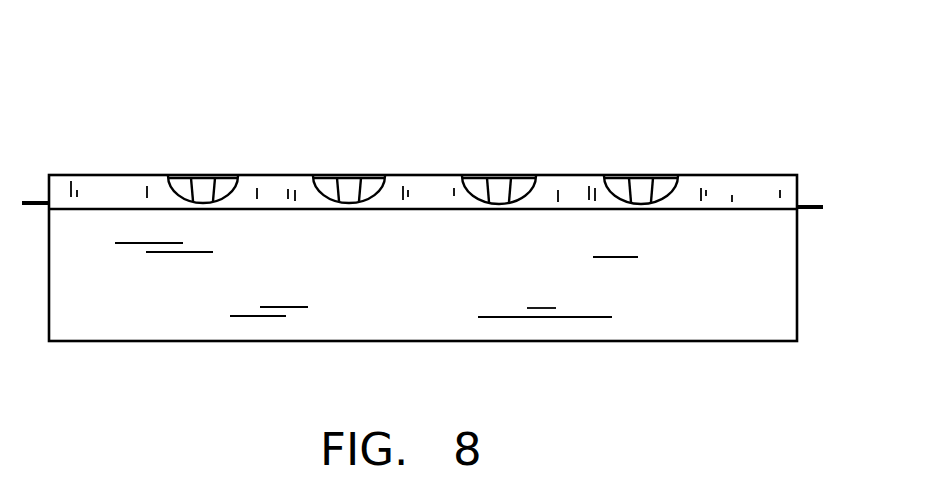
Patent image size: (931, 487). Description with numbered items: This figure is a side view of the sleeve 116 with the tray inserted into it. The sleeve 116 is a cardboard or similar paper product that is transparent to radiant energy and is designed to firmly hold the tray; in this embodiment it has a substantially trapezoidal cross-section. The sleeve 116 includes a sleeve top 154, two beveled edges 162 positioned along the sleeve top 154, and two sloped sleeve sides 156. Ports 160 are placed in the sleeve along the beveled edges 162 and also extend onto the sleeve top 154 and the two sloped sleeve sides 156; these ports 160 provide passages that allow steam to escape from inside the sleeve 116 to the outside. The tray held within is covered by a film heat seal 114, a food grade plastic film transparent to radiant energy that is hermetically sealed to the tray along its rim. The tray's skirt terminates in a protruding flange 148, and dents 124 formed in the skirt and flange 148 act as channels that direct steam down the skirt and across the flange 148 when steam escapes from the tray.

The film heat seal 114 is at (348, 175).
The sleeve 116 is at (135, 308).
The dents 124 is at (498, 192).
The flange 148 is at (811, 205).
The sleeve top 154 is at (272, 175).
The sloped sleeve sides 156 is at (700, 315).
The ports 160 is at (222, 175).
The beveled edges 162 is at (727, 187).